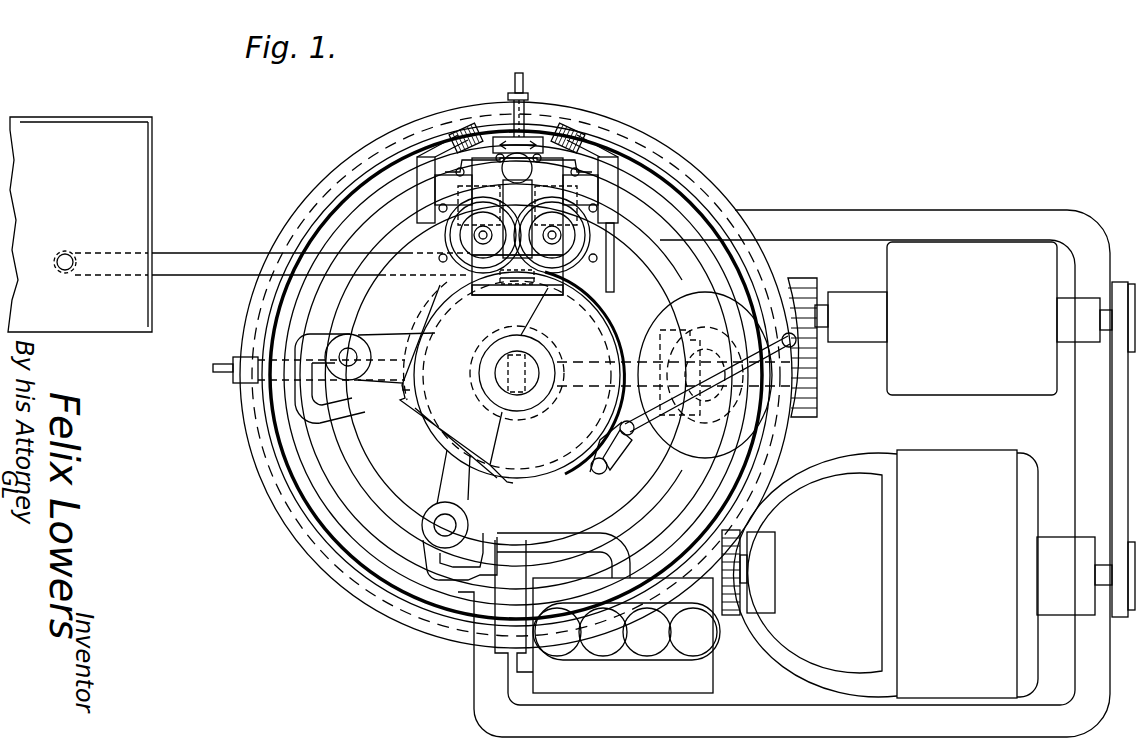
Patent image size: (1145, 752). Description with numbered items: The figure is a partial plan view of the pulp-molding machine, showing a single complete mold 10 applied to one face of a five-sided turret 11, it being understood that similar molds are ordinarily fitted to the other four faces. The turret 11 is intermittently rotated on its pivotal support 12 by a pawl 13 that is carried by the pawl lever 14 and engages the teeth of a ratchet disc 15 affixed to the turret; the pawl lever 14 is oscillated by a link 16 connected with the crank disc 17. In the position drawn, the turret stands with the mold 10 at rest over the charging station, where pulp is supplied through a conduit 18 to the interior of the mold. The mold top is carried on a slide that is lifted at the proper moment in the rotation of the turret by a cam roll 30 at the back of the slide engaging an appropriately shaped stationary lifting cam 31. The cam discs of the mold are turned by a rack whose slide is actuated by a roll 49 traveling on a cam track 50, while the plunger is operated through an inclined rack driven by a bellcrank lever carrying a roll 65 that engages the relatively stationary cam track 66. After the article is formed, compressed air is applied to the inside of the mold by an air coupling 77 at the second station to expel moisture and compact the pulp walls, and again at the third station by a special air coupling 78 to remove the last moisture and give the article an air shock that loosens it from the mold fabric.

The mold 10 is at (417, 205).
The turret 11 is at (404, 412).
The pivotal support 12 is at (490, 373).
The pawl 13 is at (628, 458).
The pawl lever 14 is at (708, 384).
The ratchet disc 15 is at (600, 298).
The link 16 is at (700, 398).
The crank disc 17 is at (706, 300).
The conduit 18 is at (186, 258).
The cam roll 30 is at (512, 298).
The lifting cam 31 is at (605, 318).
The roll 49 is at (522, 124).
The cam track 50 is at (555, 116).
The roll 65 is at (465, 126).
The cam track 66 is at (415, 147).
The air coupling 77 is at (350, 334).
The air coupling 78 is at (424, 520).